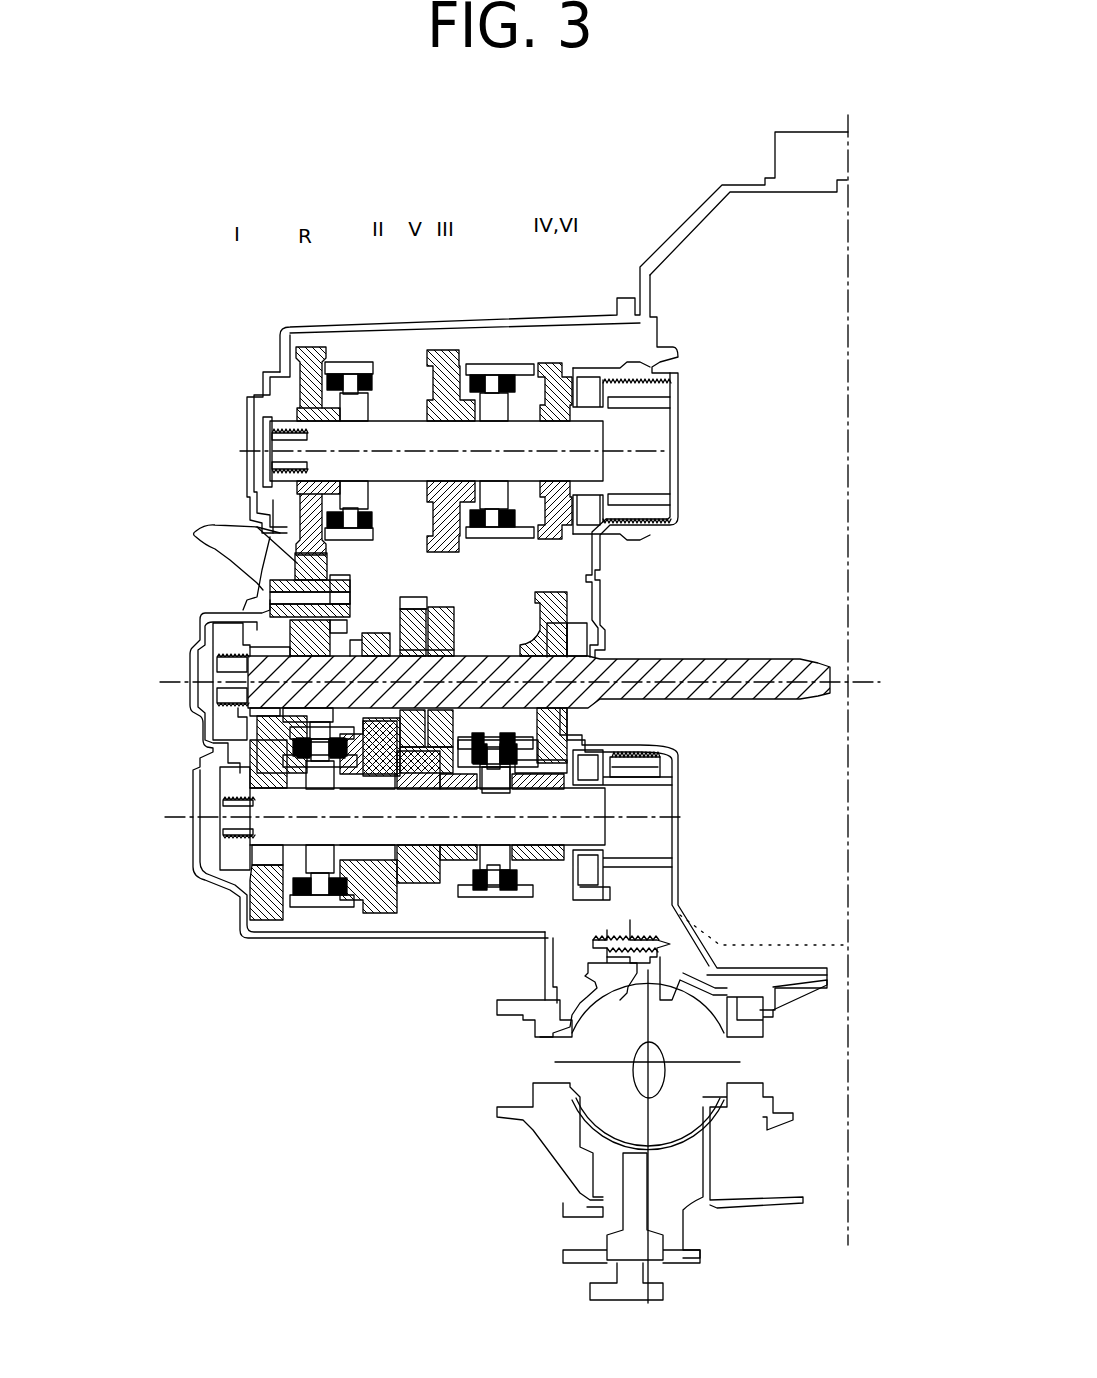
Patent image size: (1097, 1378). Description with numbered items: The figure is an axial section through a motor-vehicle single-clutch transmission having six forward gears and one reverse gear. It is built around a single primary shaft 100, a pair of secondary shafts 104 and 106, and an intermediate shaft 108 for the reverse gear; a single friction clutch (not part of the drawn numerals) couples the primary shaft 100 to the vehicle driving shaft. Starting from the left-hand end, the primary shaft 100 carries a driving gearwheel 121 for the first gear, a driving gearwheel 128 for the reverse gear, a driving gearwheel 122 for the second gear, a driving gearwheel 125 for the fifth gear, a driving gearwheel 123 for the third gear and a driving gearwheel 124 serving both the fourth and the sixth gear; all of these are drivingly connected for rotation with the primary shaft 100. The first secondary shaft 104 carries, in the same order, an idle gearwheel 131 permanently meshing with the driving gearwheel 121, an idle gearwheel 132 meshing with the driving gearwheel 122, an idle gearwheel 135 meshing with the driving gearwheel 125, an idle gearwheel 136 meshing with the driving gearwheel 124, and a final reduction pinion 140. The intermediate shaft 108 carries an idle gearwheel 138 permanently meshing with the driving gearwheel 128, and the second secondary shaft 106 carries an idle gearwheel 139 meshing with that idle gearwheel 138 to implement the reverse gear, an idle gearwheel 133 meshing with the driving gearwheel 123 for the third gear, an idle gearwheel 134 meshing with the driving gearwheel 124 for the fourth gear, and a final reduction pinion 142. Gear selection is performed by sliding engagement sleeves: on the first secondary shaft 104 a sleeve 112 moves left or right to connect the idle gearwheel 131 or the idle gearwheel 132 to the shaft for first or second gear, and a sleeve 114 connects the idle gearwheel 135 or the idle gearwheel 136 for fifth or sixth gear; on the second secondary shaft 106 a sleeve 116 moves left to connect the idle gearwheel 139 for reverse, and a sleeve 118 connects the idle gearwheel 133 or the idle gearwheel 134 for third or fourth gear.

The primary shaft 100 is at (772, 660).
The first secondary shaft 104 is at (655, 805).
The second secondary shaft 106 is at (653, 443).
The intermediate shaft 108 is at (197, 525).
The sliding engagement sleeve 112 is at (320, 903).
The sliding engagement sleeve 114 is at (502, 903).
The sliding engagement sleeve 116 is at (360, 340).
The sliding engagement sleeve 118 is at (500, 345).
The driving gearwheel 121 is at (260, 647).
The driving gearwheel 122 is at (378, 632).
The driving gearwheel 123 is at (445, 610).
The driving gearwheel 124 is at (552, 598).
The driving gearwheel 125 is at (412, 595).
The driving gearwheel 128 is at (245, 762).
The idle gearwheel 131 is at (272, 927).
The idle gearwheel 132 is at (380, 913).
The idle gearwheel 133 is at (445, 345).
The idle gearwheel 134 is at (558, 345).
The idle gearwheel 135 is at (423, 883).
The idle gearwheel 136 is at (558, 872).
The idle gearwheel 138 is at (250, 523).
The idle gearwheel 139 is at (315, 345).
The final reduction pinion 140 is at (652, 765).
The final reduction pinion 142 is at (653, 505).